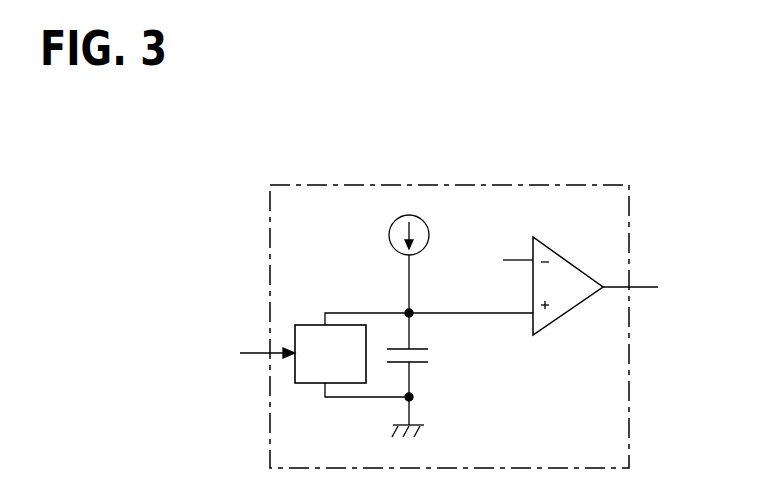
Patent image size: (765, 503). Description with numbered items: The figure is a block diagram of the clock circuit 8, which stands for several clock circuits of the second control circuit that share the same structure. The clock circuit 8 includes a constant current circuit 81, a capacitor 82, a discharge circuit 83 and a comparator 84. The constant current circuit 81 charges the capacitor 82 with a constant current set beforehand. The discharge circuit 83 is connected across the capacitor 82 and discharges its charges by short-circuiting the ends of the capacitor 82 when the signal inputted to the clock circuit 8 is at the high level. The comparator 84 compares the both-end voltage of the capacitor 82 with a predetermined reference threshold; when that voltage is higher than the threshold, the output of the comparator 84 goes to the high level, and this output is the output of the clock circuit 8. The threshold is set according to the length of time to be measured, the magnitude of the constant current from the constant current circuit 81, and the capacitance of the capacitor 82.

The clock circuit 8 is at (312, 184).
The constant current circuit 81 is at (425, 217).
The capacitor 82 is at (423, 364).
The discharge circuit 83 is at (315, 324).
The comparator 84 is at (563, 255).